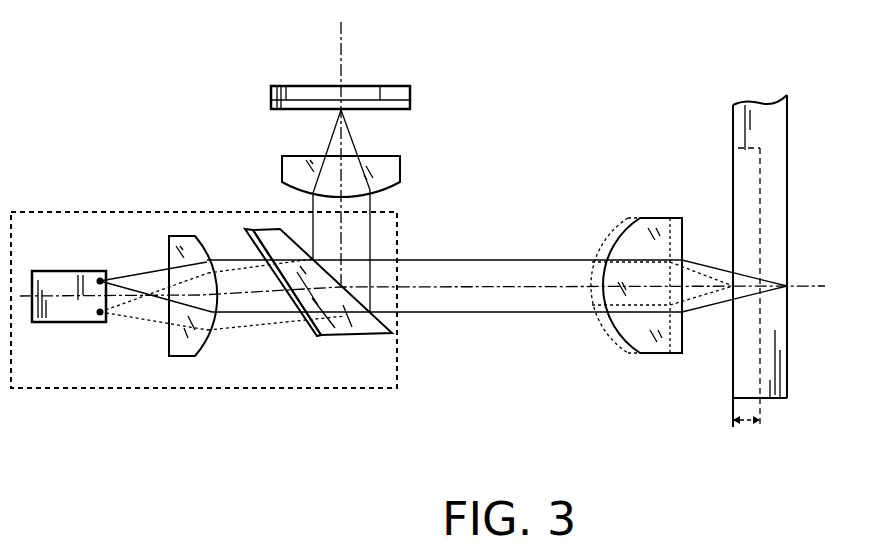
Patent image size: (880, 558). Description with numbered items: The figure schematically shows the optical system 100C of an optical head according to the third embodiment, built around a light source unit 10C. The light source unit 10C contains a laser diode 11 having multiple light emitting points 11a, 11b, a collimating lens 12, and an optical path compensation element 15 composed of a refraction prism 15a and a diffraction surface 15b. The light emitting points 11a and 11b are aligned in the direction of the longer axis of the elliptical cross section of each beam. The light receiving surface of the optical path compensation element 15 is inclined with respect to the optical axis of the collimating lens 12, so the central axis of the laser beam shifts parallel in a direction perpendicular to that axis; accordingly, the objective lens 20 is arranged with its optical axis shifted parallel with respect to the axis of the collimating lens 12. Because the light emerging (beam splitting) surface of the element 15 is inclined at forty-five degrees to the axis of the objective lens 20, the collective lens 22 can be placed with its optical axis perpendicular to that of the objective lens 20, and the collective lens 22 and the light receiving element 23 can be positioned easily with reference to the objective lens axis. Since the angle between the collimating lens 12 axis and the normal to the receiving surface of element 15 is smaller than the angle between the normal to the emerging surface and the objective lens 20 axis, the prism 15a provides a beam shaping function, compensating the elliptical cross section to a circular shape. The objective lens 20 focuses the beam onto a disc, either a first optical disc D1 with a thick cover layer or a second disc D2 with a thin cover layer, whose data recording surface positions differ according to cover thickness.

The optical system 100C is at (611, 60).
The light source unit 10C is at (173, 212).
The laser diode 11 is at (68, 312).
The light emitting point 11a is at (98, 278).
The light emitting point 11b is at (100, 315).
The collimating lens 12 is at (182, 340).
The optical path compensation element 15 is at (318, 354).
The refraction prism 15a is at (355, 317).
The diffraction surface 15b is at (290, 308).
The objective lens 20 is at (640, 337).
The collective lens 22 is at (400, 171).
The light receiving element 23 is at (407, 100).
The first optical disc D1 is at (778, 230).
The second disc D2 is at (727, 420).